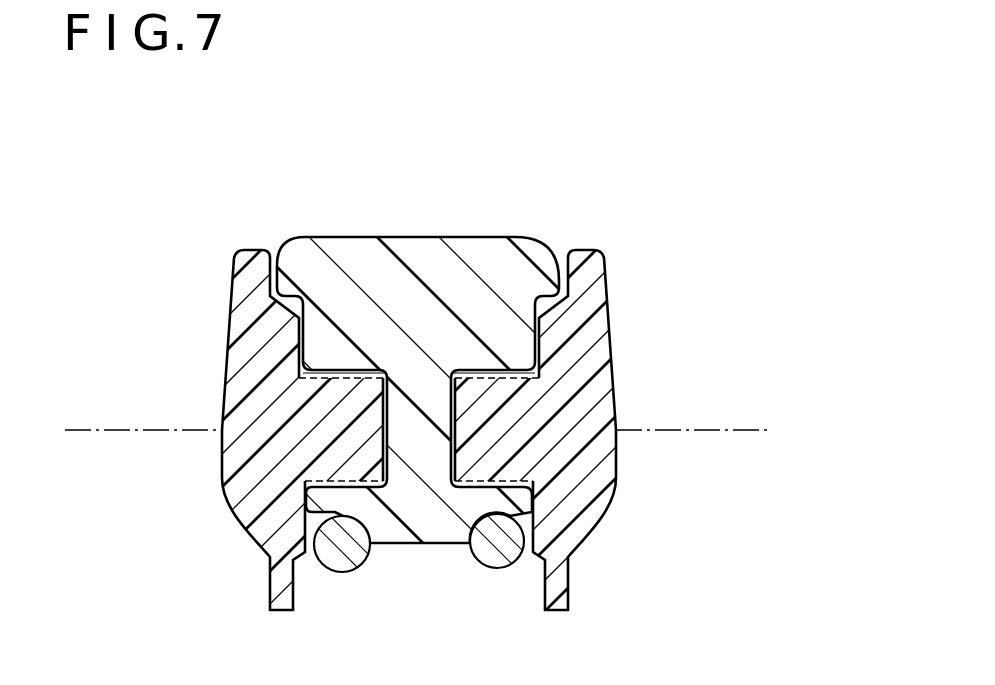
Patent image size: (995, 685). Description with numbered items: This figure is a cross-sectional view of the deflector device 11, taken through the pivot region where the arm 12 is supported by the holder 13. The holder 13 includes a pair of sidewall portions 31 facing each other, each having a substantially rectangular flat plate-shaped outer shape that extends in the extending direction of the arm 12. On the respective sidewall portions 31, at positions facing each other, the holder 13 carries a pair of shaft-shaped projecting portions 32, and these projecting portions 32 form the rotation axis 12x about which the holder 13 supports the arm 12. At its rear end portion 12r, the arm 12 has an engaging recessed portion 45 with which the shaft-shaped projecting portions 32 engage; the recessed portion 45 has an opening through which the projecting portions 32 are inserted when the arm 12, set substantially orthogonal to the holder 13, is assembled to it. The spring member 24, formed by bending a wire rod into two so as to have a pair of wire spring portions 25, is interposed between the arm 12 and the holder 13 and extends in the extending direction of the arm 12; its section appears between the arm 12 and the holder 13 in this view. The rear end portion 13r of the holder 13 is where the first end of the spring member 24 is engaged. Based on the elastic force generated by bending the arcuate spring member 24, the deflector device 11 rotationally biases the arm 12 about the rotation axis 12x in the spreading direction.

The deflector device 11 is at (112, 150).
The arm 12 is at (497, 417).
The rear end portion 12r is at (427, 236).
The rotation axis 12x is at (736, 430).
The holder 13 is at (497, 417).
The rear end portion 13r is at (497, 417).
The sidewall portions 31 is at (497, 417).
The shaft-shaped projecting portions 32 is at (386, 400).
The engaging recessed portion 45 is at (349, 371).
The spring member 24 is at (421, 555).
The wire spring portions 25 is at (325, 566).